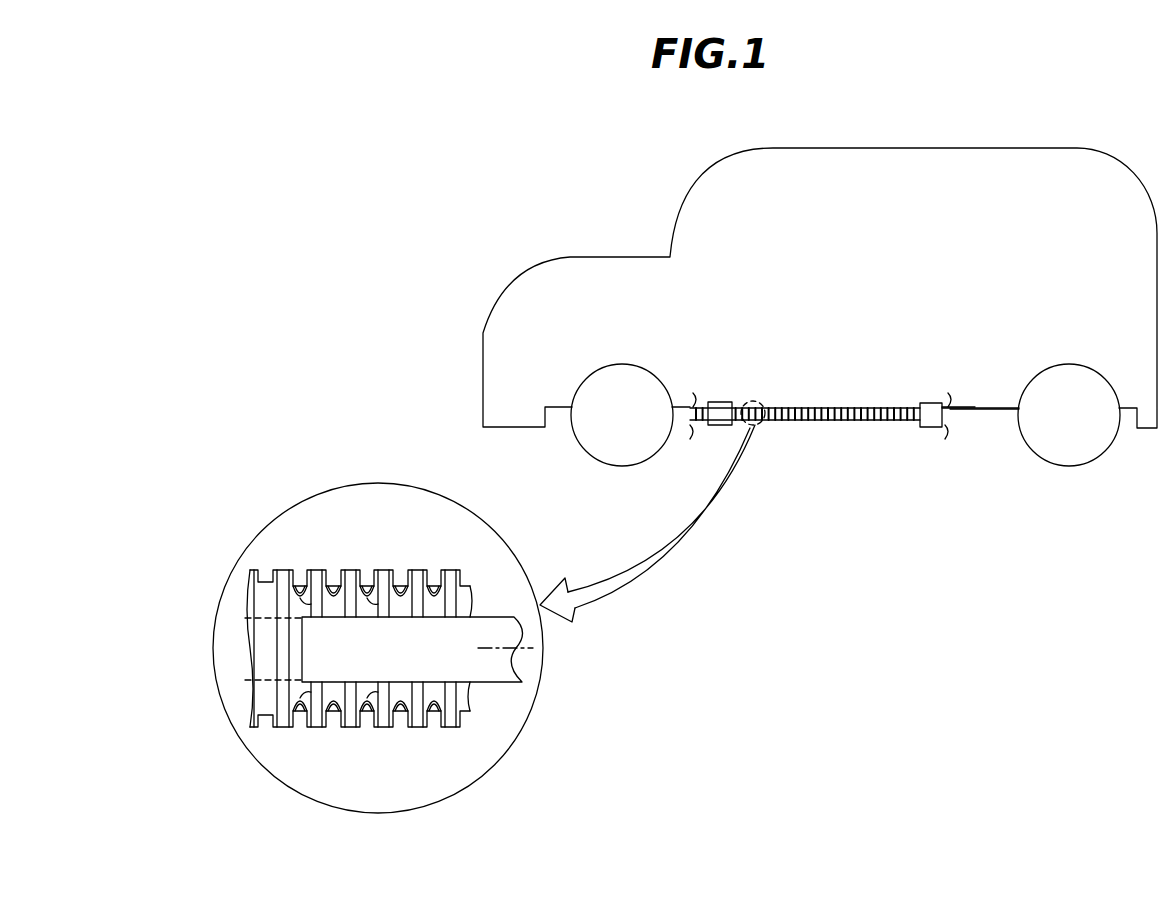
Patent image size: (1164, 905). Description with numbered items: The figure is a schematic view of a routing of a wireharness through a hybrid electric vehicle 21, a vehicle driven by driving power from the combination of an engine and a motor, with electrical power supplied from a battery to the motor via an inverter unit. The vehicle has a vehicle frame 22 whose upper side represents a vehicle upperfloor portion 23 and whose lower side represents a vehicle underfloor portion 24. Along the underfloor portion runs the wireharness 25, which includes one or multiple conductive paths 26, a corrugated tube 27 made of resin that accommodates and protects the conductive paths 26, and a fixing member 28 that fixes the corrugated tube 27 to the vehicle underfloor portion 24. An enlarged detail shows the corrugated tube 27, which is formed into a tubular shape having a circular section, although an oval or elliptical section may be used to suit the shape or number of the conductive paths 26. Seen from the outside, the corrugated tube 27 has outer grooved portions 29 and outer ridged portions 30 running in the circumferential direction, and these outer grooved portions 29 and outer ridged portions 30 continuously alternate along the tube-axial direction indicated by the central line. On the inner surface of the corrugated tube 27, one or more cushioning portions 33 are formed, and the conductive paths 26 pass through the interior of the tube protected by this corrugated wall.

The hybrid electric vehicle 21 is at (565, 252).
The vehicle frame 22 is at (1005, 406).
The vehicle upperfloor portion 23 is at (975, 404).
The vehicle underfloor portion 24 is at (980, 412).
The wireharness 25 is at (825, 424).
The conductive path 26 is at (496, 672).
The corrugated tube 27 is at (863, 422).
The fixing member 28 is at (716, 402).
The outer grooved portion 29 is at (437, 578).
The outer ridged portion 30 is at (450, 574).
The cushioning portion 33 is at (372, 700).